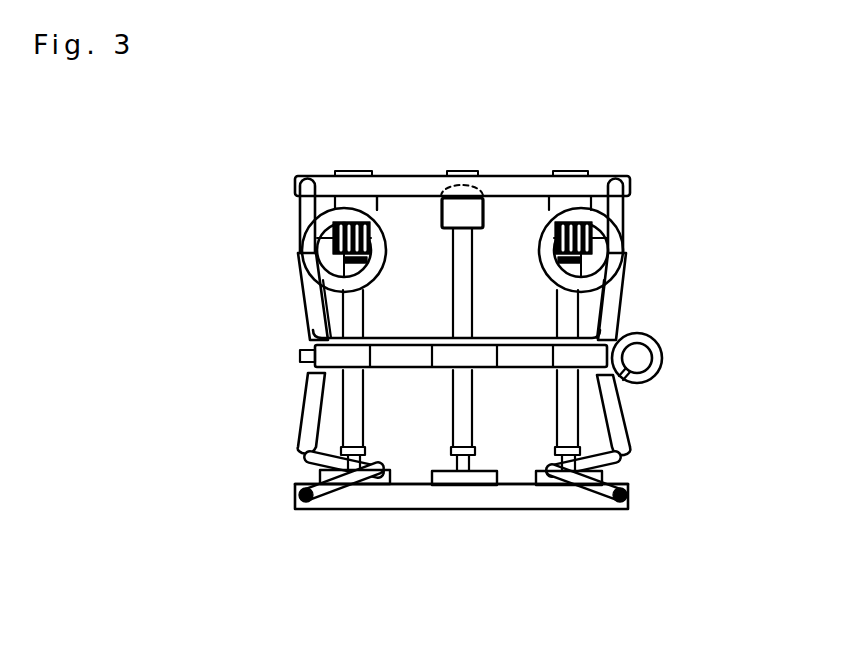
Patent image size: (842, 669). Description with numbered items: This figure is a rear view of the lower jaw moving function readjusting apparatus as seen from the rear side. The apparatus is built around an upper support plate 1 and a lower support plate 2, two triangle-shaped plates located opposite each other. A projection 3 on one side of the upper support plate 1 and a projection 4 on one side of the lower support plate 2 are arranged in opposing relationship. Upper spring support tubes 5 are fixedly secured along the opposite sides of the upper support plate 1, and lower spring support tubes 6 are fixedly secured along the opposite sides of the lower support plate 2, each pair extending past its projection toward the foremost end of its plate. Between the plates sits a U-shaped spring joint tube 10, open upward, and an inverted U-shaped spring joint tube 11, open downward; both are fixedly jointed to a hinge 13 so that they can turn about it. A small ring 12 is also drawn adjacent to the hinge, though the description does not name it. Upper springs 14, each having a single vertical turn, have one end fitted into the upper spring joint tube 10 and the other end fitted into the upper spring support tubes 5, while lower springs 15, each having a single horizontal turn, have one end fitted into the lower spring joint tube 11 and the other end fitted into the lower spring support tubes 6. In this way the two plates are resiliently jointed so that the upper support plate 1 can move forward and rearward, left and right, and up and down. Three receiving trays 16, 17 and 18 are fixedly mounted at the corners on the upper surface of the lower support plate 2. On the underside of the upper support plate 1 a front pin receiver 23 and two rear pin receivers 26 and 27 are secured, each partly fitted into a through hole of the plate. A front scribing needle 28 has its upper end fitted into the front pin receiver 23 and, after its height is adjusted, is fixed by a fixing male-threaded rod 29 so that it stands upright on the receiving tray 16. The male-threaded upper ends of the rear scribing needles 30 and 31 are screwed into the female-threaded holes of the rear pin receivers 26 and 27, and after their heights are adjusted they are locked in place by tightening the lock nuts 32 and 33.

The upper support plate 1 is at (407, 176).
The lower support plate 2 is at (400, 512).
The projection 3 is at (518, 185).
The projection 4 is at (510, 503).
The upper spring support tube 5 is at (303, 178).
The lower spring support tube 6 is at (297, 497).
The U-shaped spring joint tube 10 is at (624, 283).
The inverted U-shaped spring joint tube 11 is at (613, 417).
The ring 12 is at (664, 351).
The hinge 13 is at (310, 367).
The upper spring 14 is at (380, 254).
The lower spring 15 is at (358, 480).
The receiving tray 16 is at (485, 484).
The receiving tray 17 is at (323, 473).
The receiving tray 18 is at (598, 478).
The front pin receiver 23 is at (487, 228).
The rear pin receiver 26 is at (378, 210).
The rear pin receiver 27 is at (541, 222).
The front scribing needle 28 is at (460, 292).
The fixing male-threaded rod 29 is at (465, 185).
The rear scribing needle 30 is at (355, 320).
The rear scribing needle 31 is at (567, 320).
The lock nut 32 is at (318, 238).
The lock nut 33 is at (595, 245).